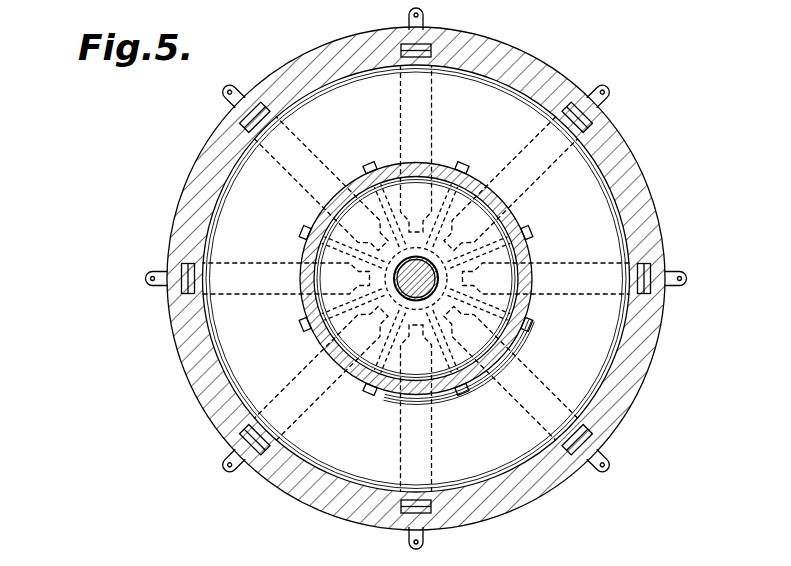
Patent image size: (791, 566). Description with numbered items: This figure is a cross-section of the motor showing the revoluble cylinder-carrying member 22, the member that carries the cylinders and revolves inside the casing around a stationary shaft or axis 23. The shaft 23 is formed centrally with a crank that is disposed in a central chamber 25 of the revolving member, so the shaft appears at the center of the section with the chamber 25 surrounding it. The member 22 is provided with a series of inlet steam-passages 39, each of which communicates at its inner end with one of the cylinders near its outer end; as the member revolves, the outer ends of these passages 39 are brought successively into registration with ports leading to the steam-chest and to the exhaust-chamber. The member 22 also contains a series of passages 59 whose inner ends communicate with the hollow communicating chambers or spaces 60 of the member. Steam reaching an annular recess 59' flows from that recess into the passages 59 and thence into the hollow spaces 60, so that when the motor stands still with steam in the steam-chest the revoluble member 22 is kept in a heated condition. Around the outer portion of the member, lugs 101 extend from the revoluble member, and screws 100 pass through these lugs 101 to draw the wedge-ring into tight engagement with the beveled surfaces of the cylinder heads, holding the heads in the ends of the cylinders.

The revoluble cylinder-carrying member 22 is at (195, 376).
The stationary shaft or axis 23 is at (432, 279).
The central chamber 25 is at (398, 391).
The inlet steam-passages 39 is at (418, 58).
The passages 59 is at (441, 278).
The annular recess 59' is at (288, 301).
The hollow communicating chambers or spaces 60 is at (602, 367).
The screws 100 is at (605, 92).
The lugs 101 is at (424, 14).